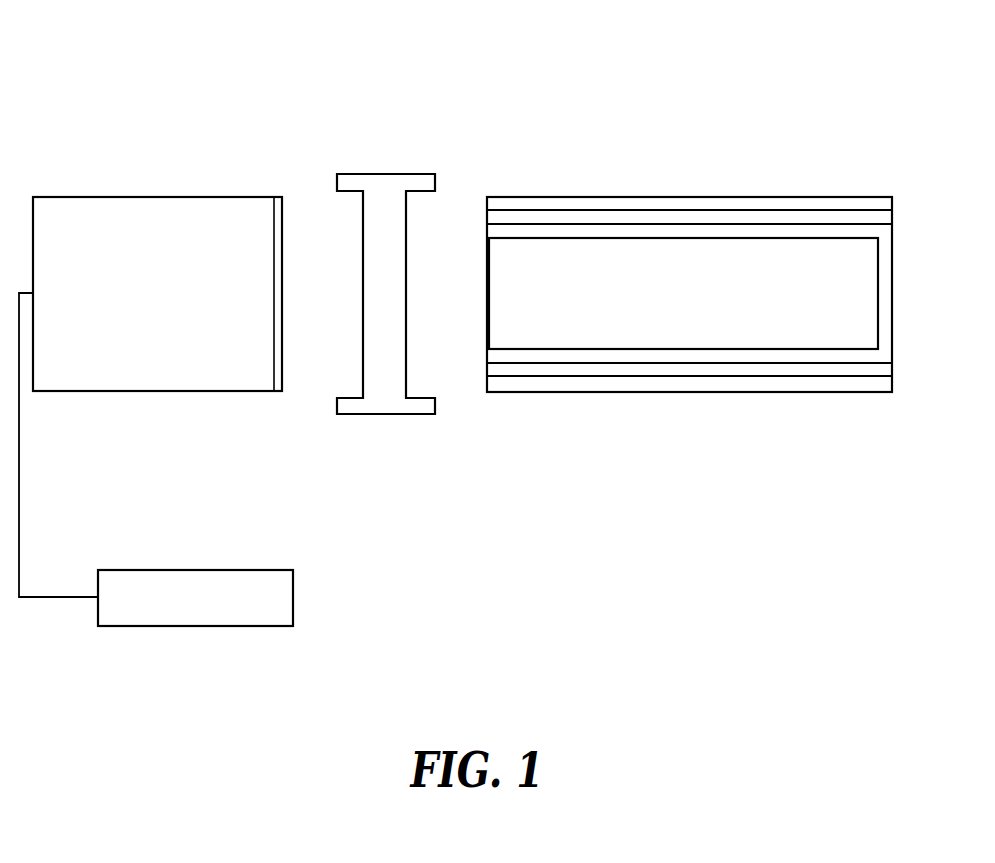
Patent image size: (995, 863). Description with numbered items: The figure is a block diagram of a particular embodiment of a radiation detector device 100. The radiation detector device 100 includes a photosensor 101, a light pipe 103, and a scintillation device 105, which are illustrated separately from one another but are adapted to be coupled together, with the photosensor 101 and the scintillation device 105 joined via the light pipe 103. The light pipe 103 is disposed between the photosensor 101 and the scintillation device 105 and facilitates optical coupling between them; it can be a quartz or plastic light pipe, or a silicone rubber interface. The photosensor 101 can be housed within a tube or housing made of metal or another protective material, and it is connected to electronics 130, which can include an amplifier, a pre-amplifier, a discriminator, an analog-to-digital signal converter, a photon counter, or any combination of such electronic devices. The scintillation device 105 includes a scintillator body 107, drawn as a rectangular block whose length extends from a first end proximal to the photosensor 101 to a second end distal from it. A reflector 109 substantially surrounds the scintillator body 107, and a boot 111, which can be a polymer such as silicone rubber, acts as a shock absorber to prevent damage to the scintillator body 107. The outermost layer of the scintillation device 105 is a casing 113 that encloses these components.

The radiation detector device 100 is at (104, 99).
The photosensor 101 is at (135, 309).
The light pipe 103 is at (392, 414).
The scintillation device 105 is at (689, 307).
The scintillator body 107 is at (646, 311).
The reflector 109 is at (742, 232).
The boot 111 is at (658, 219).
The casing 113 is at (593, 196).
The electronics 130 is at (195, 570).